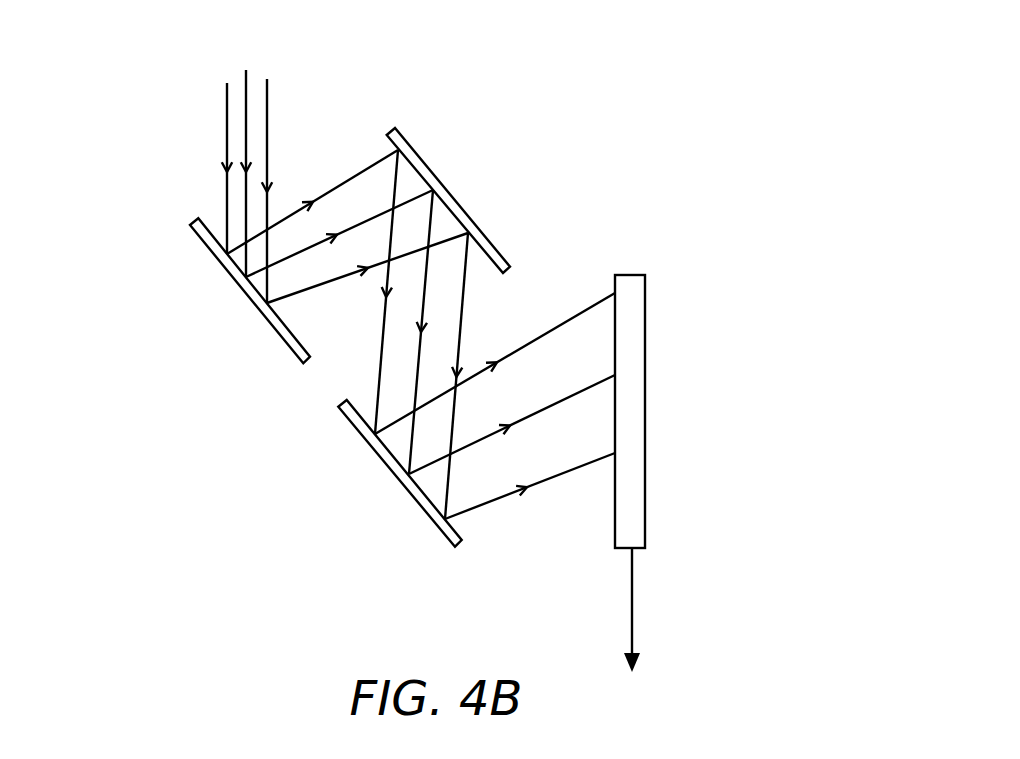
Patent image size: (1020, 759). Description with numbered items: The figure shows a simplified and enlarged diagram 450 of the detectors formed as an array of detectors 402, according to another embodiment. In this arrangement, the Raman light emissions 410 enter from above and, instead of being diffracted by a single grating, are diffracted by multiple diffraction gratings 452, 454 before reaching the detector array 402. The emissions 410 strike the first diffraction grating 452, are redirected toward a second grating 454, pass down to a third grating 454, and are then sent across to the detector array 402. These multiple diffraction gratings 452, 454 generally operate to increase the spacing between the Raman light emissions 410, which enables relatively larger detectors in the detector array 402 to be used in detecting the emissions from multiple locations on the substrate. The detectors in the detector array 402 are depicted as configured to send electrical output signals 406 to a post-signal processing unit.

The diagram 450 is at (670, 79).
The Raman light emissions 410 is at (227, 132).
The diffraction grating 452 is at (282, 338).
The diffraction grating 454 is at (343, 490).
The array of detectors 402 is at (645, 325).
The electrical output signals 406 is at (632, 610).